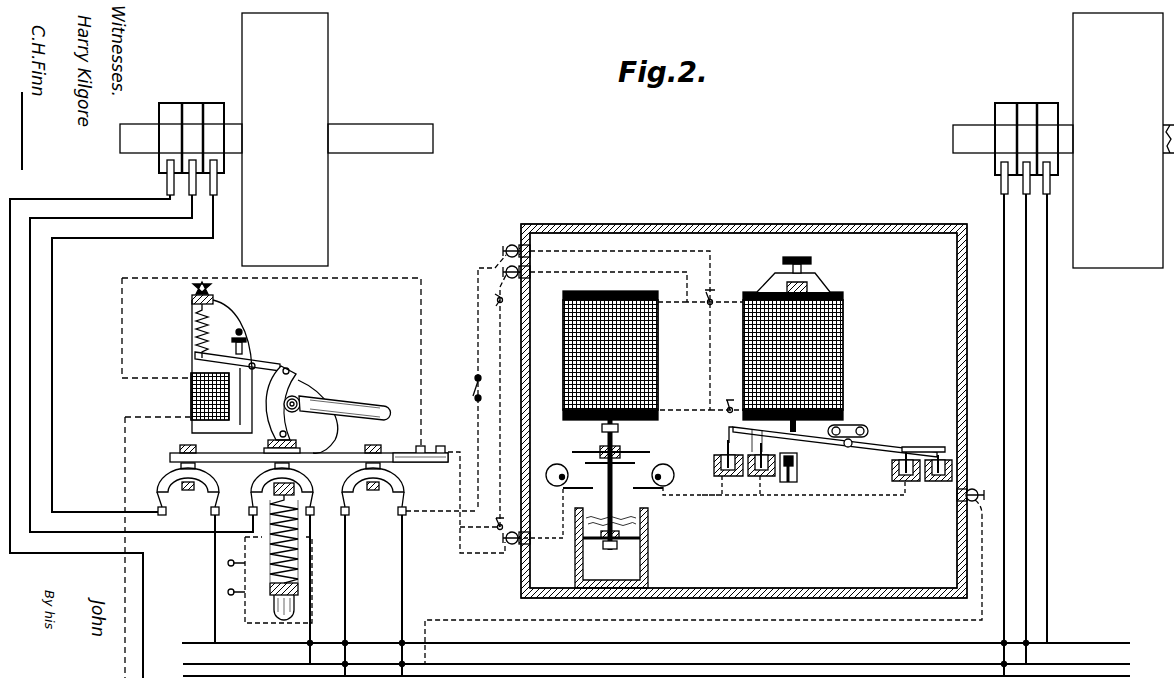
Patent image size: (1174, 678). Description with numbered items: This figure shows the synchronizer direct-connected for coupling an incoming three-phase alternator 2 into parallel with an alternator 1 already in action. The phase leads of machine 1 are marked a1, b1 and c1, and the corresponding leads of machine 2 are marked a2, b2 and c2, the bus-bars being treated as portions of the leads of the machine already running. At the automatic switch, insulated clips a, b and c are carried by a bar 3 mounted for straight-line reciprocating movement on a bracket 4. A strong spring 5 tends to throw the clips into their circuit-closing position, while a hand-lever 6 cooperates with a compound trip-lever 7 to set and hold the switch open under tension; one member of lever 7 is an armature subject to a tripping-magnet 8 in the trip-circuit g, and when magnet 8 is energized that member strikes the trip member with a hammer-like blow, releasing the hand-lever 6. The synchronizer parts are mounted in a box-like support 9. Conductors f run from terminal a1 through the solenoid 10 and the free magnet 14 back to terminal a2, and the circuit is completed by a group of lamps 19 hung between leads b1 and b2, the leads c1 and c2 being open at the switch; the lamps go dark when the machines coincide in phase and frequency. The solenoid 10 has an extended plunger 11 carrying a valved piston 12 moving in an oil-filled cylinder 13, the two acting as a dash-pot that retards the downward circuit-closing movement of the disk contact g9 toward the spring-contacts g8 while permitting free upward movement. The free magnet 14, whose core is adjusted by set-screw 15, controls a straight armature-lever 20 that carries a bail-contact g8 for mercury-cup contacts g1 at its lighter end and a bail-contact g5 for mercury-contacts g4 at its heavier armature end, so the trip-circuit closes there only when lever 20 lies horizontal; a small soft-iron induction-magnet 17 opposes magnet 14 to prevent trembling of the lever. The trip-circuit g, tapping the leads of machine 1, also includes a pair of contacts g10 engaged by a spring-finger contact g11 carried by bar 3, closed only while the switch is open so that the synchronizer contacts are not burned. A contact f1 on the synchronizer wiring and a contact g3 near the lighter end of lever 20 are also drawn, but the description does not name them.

The alternator already in action 1 is at (1067, 65).
The incoming alternator 2 is at (236, 66).
The switch-bar 3 is at (316, 456).
The bracket 4 is at (298, 374).
The closing-spring 5 is at (270, 549).
The hand-lever 6 is at (307, 403).
The compound trip-lever 7 is at (256, 362).
The tripping-magnet 8 is at (191, 400).
The box-like support 9 is at (752, 224).
The solenoid 10 is at (656, 377).
The plunger 11 is at (618, 432).
The valved piston 12 is at (646, 534).
The cylinder 13 is at (580, 571).
The free magnet 14 is at (844, 377).
The set-screw 15 is at (810, 261).
The induction-magnet 17 is at (797, 470).
The group of lamps 19 is at (272, 588).
The armature-lever 20 is at (862, 432).
The insulated clip a is at (406, 488).
The phase lead a1 is at (1003, 262).
The phase lead a2 is at (166, 198).
The insulated clip b is at (260, 478).
The phase lead b1 is at (1025, 292).
The phase lead b2 is at (142, 219).
The insulated clip c is at (166, 478).
The phase lead c1 is at (1046, 319).
The phase lead c2 is at (160, 238).
The synchronizer-circuit conductors f is at (498, 300).
The contact f1 is at (472, 392).
The trip-circuit g is at (432, 636).
The mercury-cup contacts g1 is at (916, 498).
The contact g3 is at (928, 446).
The mercury-contacts g4 is at (742, 496).
The bail-contact g5 is at (726, 432).
The spring-contacts g8 is at (572, 476).
The disk contact g9 is at (580, 452).
The contacts g10 is at (436, 446).
The spring-finger contact g11 is at (444, 462).